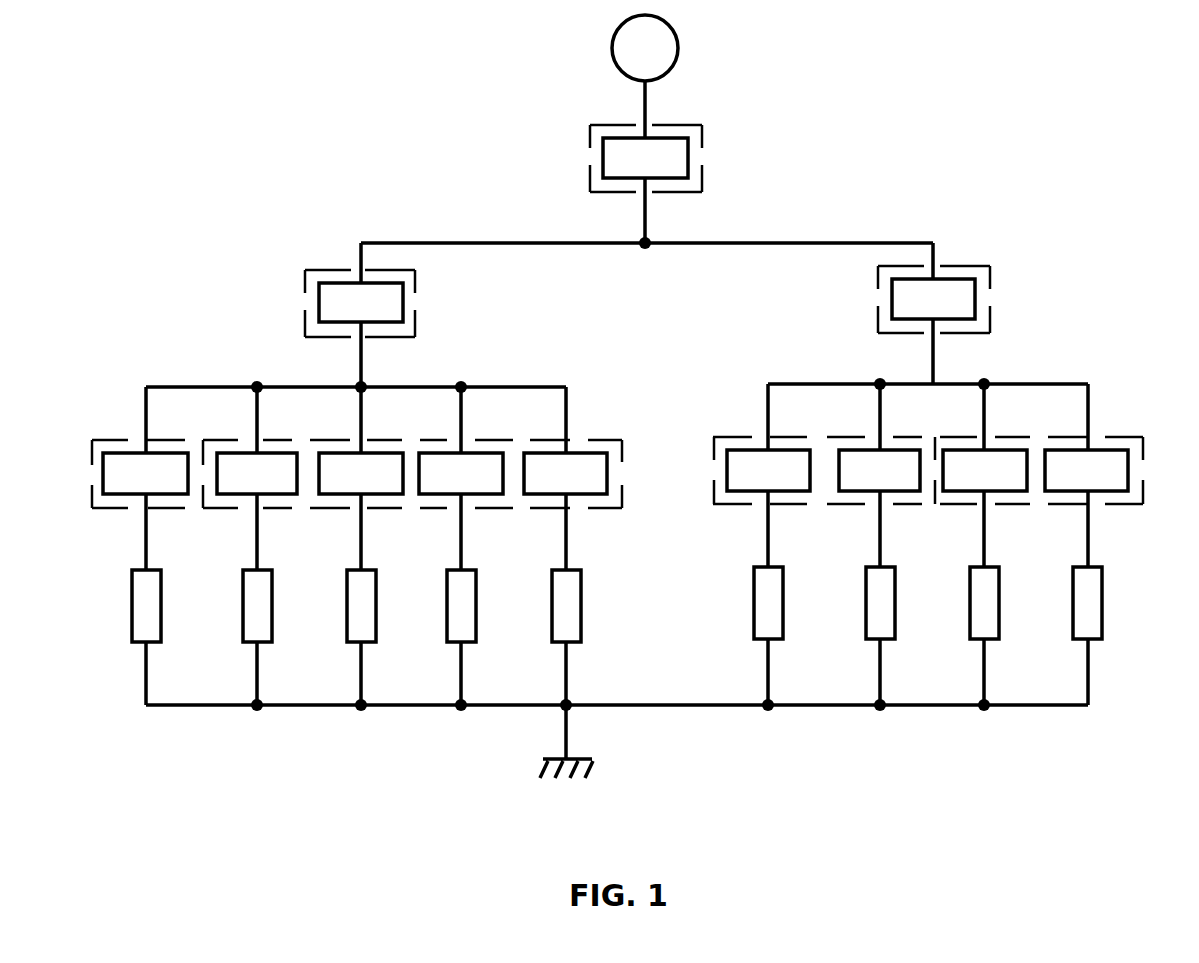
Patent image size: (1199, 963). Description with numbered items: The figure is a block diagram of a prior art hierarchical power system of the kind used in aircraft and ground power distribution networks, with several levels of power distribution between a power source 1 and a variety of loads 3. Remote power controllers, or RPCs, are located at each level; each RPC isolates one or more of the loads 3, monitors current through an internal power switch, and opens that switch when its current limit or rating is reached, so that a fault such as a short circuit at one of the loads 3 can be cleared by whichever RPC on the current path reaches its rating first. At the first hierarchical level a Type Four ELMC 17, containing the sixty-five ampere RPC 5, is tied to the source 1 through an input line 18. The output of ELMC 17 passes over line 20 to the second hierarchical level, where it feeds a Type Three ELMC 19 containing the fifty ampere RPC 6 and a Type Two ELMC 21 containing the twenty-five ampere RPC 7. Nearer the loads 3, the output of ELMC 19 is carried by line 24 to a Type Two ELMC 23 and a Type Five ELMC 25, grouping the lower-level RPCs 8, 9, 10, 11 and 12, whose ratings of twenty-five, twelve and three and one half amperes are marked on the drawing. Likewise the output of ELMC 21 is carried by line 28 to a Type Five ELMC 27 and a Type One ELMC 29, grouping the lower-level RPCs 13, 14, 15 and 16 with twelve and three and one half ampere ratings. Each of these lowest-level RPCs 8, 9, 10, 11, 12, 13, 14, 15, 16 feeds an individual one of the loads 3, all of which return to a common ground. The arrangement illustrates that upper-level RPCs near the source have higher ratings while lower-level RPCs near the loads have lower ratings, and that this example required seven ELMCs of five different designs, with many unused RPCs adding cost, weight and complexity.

The power source 1 is at (678, 48).
The input line 18 is at (645, 103).
The remote power controller 5 is at (603, 158).
The Type 4 ELMC 17 is at (702, 177).
The line 20 is at (645, 217).
The remote power controller 6 is at (319, 305).
The Type 3 ELMC 19 is at (415, 319).
The line 24 is at (361, 362).
The remote power controller 7 is at (892, 300).
The Type 2 ELMC 21 is at (990, 317).
The line 28 is at (933, 358).
The Type 2 ELMC 23 is at (92, 452).
The remote power controller 8 is at (123, 508).
The remote power controller 9 is at (230, 508).
The remote power controller 10 is at (330, 508).
The remote power controller 11 is at (433, 508).
The remote power controller 12 is at (543, 508).
The Type 5 ELMC 25 is at (602, 440).
The Type 5 ELMC 27 is at (736, 437).
The remote power controller 13 is at (742, 504).
The remote power controller 14 is at (860, 504).
The remote power controller 15 is at (960, 504).
The remote power controller 16 is at (1062, 504).
The Type 1 ELMC 29 is at (1125, 437).
The loads 3 is at (130, 603).